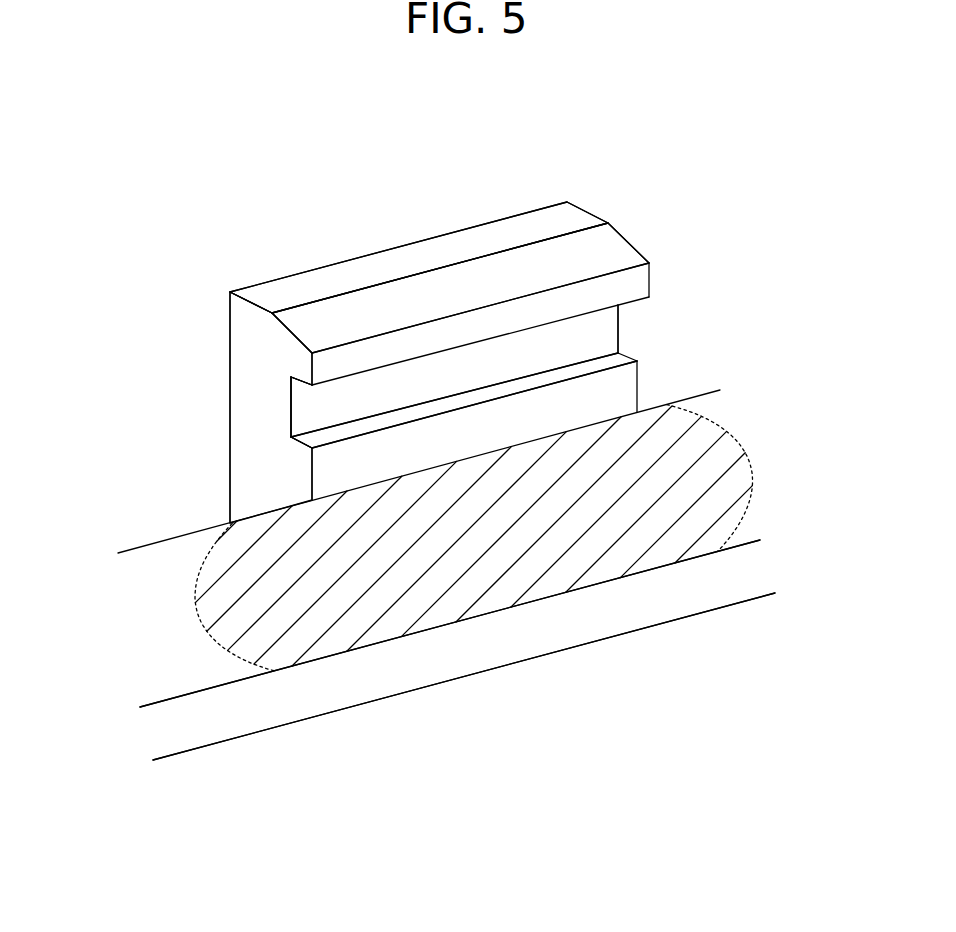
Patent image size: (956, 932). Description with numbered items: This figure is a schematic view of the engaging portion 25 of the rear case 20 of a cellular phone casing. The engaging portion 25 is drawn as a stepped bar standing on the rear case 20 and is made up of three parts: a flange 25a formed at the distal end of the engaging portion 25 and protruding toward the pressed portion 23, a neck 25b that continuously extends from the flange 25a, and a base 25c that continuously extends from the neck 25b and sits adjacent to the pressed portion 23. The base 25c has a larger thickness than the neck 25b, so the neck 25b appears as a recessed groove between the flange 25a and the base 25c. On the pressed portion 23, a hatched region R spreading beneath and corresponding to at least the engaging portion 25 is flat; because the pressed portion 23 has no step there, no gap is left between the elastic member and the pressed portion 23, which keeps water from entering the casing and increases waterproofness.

The rear case 20 is at (340, 711).
The pressed portion 23 is at (178, 662).
The engaging portion 25 is at (250, 287).
The flange 25a is at (434, 294).
The neck 25b is at (603, 340).
The base 25c is at (260, 477).
The region R is at (497, 580).